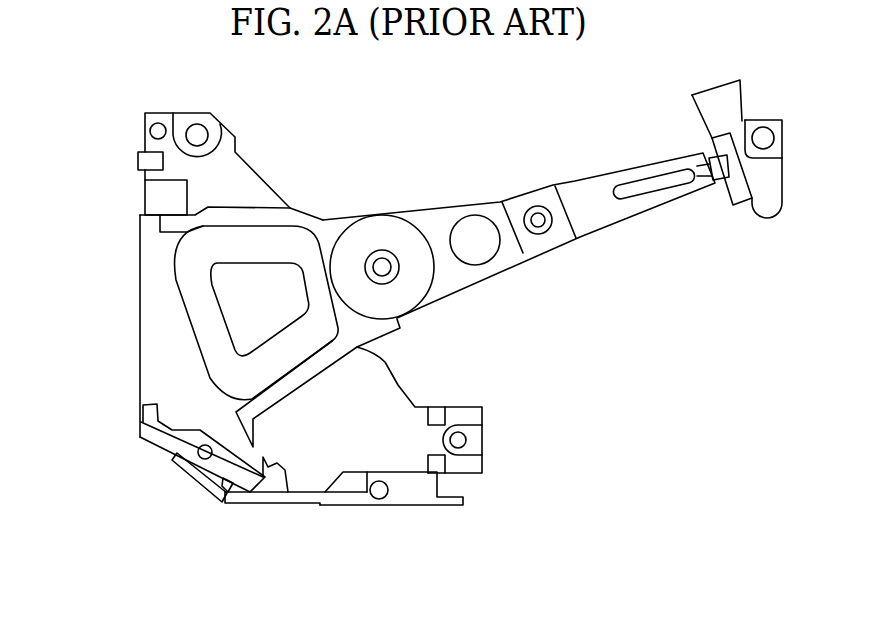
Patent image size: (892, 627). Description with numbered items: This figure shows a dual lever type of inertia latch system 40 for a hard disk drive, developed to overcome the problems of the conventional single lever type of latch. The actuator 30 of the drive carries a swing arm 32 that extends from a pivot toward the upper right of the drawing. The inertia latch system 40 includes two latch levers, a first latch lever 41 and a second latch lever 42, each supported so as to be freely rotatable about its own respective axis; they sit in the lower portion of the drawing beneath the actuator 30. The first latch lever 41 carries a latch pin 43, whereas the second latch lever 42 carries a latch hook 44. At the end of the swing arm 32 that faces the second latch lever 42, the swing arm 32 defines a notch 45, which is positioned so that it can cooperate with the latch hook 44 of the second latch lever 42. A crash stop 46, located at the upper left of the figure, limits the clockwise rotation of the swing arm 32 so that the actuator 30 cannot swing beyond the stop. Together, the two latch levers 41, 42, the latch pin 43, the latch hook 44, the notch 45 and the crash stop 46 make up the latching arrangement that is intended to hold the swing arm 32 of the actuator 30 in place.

The actuator 30 is at (492, 172).
The swing arm 32 is at (470, 277).
The inertia latch system 40 is at (283, 526).
The first latch lever 41 is at (422, 497).
The second latch lever 42 is at (147, 437).
The latch pin 43 is at (224, 503).
The latch hook 44 is at (270, 463).
The notch 45 is at (252, 430).
The crash stop 46 is at (153, 197).